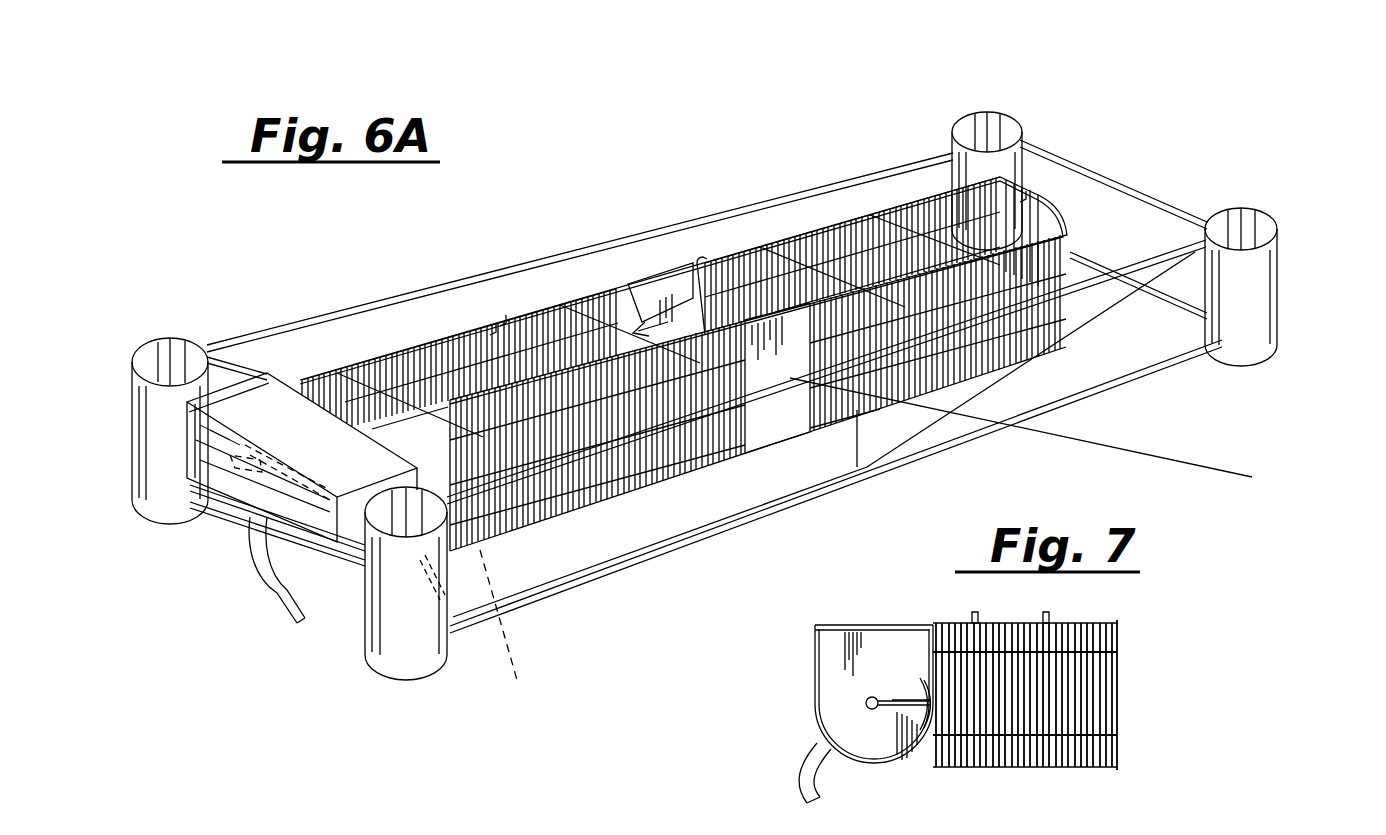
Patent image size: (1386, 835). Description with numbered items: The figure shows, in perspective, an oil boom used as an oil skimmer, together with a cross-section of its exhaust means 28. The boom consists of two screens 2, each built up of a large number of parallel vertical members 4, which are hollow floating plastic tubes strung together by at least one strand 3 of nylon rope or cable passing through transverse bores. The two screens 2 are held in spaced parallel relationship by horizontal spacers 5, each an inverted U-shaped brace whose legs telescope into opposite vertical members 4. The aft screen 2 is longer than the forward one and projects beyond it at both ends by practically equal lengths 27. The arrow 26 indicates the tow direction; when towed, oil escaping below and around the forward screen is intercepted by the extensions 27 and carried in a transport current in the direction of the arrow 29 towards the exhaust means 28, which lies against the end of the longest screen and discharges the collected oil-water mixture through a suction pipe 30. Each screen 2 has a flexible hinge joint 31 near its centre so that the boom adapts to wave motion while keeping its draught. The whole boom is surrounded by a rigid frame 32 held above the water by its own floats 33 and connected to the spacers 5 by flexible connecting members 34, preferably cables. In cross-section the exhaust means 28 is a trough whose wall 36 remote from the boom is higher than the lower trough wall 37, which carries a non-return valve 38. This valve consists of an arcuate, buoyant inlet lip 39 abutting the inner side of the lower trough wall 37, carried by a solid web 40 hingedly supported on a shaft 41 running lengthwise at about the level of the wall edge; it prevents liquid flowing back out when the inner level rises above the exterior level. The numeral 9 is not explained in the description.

In FIG. 6A, the screen 2 is at (800, 230).
In FIG. 7, the screen 2 is at (1062, 640).
In FIG. 6A, the strand 3 is at (370, 350).
In FIG. 6A, the vertical member 4 is at (463, 345).
In FIG. 7, the vertical member 4 is at (1083, 623).
In FIG. 6A, the horizontal spacer 5 is at (503, 325).
In FIG. 7, the horizontal spacer 5 is at (1044, 612).
In FIG. 6A, the partition 9 is at (705, 270).
In FIG. 6A, the arrow indicating tow direction 26 is at (880, 492).
In FIG. 6A, the extension of the aft screen 27 is at (300, 378).
In FIG. 6A, the exhaust means 28 is at (185, 440).
In FIG. 7, the exhaust means 28 is at (803, 668).
In FIG. 6A, the arrow indicating flow direction 29 is at (650, 320).
In FIG. 6A, the suction pipe 30 is at (280, 597).
In FIG. 7, the suction pipe 30 is at (800, 757).
In FIG. 6A, the flexible hinge joint 31 is at (660, 283).
In FIG. 6A, the rigid frame 32 is at (867, 142).
In FIG. 6A, the float 33 is at (155, 470).
In FIG. 6A, the flexible connecting member 34 is at (575, 278).
In FIG. 7, the trough wall remote from the oil boom 36 is at (813, 645).
In FIG. 7, the lower trough wall 37 is at (905, 765).
In FIG. 7, the non-return valve 38 is at (886, 683).
In FIG. 6A, the inlet lip 39 is at (445, 625).
In FIG. 7, the inlet lip 39 is at (925, 680).
In FIG. 6A, the solid web 40 is at (210, 505).
In FIG. 7, the solid web 40 is at (892, 712).
In FIG. 6A, the shaft 41 is at (240, 530).
In FIG. 7, the shaft 41 is at (866, 705).